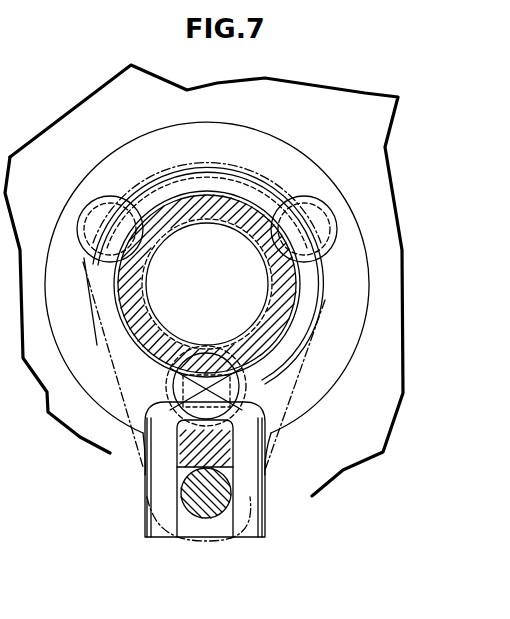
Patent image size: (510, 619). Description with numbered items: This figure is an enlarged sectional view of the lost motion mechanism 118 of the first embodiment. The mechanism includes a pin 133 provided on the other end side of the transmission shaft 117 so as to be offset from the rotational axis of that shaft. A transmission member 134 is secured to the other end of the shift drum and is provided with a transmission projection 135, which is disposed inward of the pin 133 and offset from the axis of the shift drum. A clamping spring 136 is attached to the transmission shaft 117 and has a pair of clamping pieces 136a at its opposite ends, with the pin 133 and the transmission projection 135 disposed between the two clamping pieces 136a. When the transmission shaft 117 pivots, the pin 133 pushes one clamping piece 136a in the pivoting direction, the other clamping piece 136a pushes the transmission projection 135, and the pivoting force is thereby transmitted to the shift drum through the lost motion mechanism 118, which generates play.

The transmission shaft 117 is at (295, 376).
The lost motion mechanism 118 is at (140, 467).
The pin 133 is at (200, 517).
The transmission member 134 is at (352, 313).
The transmission projection 135 is at (230, 457).
The clamping spring 136 is at (262, 195).
The clamping piece 136a is at (163, 530).